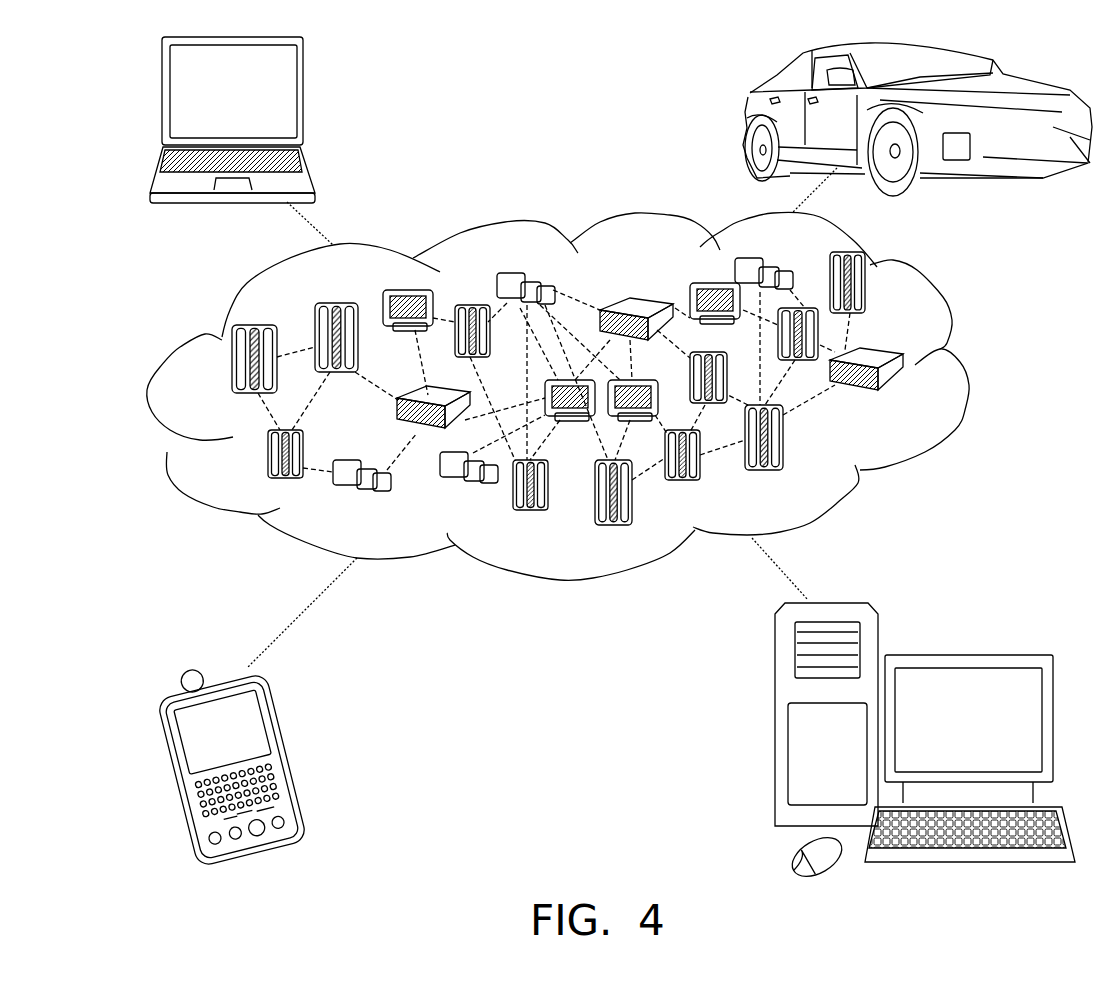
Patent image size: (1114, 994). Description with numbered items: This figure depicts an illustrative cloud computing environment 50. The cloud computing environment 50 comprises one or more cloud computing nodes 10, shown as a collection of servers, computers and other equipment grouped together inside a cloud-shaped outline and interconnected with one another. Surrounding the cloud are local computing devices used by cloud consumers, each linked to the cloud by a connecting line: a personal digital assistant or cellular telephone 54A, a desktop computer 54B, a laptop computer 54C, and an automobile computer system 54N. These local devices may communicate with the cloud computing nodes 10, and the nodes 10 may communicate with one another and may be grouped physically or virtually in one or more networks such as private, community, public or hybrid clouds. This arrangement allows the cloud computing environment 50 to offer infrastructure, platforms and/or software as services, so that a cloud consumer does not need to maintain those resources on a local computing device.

The cloud computing node 10 is at (905, 398).
The cloud computing environment 50 is at (965, 372).
The personal digital assistant or cellular telephone 54A is at (292, 748).
The desktop computer 54B is at (965, 655).
The laptop computer 54C is at (302, 102).
The automobile computer system 54N is at (743, 117).